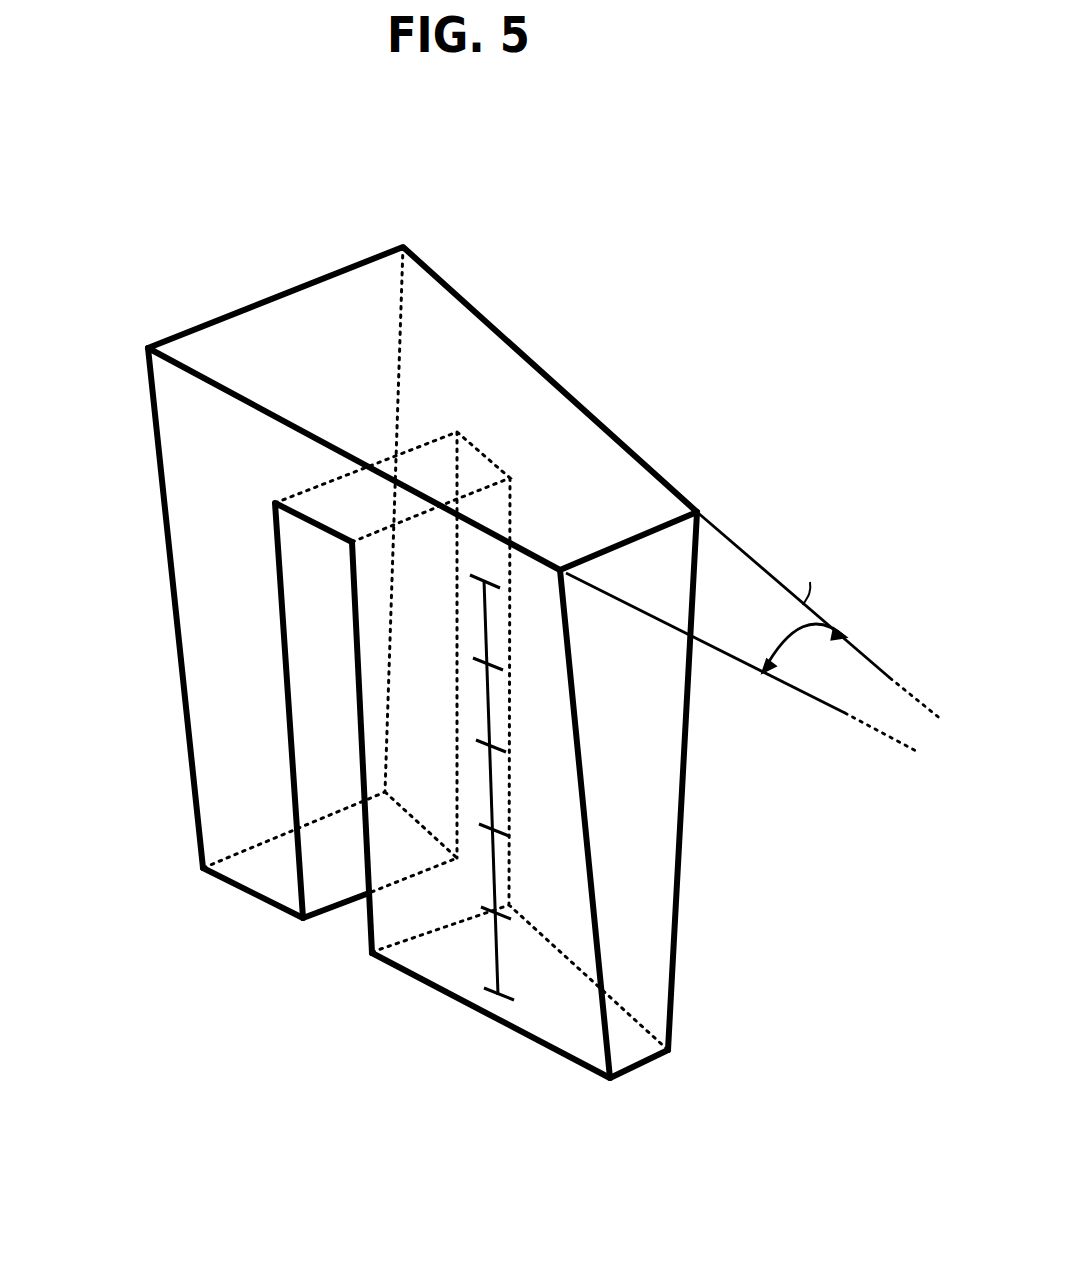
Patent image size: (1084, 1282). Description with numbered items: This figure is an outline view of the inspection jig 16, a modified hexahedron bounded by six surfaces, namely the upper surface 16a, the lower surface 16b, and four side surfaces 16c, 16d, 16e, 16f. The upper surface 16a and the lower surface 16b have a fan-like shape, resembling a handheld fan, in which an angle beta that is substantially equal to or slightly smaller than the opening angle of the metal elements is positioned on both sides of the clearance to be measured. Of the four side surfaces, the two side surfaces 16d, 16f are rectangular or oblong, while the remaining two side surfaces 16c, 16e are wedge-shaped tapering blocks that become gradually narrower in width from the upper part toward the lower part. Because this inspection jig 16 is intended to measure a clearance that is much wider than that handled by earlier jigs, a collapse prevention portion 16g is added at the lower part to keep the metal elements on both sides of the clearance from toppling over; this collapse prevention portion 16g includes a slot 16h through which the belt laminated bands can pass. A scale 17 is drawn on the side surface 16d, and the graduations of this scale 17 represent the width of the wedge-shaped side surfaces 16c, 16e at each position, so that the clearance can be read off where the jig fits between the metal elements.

The inspection jig 16 is at (603, 251).
The upper surface 16a is at (267, 322).
The lower surface 16b is at (548, 1048).
The side surface 16c is at (168, 558).
The side surface 16d is at (437, 966).
The side surface 16e is at (663, 940).
The side surface 16f is at (683, 813).
The collapse prevention portion 16g is at (370, 967).
The slot 16h is at (308, 675).
The scale 17 is at (537, 821).